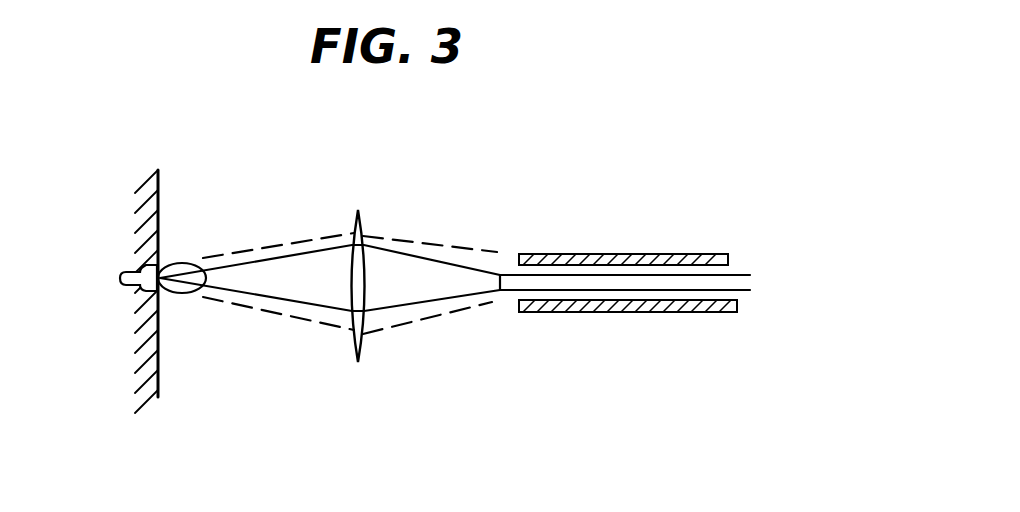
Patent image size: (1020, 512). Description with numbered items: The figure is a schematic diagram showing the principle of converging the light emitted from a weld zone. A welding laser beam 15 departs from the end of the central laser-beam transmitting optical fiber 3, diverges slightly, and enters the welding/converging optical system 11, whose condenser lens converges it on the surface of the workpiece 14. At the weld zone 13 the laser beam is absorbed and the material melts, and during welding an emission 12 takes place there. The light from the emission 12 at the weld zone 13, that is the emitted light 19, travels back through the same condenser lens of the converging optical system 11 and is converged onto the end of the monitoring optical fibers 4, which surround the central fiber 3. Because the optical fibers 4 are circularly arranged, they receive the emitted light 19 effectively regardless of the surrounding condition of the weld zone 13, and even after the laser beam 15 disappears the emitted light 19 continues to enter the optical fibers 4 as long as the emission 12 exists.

The laser-beam transmitting optical fiber 3 is at (549, 272).
The monitoring optical fibers 4 is at (668, 254).
The welding/converging optical system 11 is at (362, 222).
The emission 12 is at (183, 262).
The weld zone 13 is at (146, 288).
The workpiece 14 is at (150, 197).
The welding laser beam 15 is at (287, 306).
The emitted light 19 is at (490, 303).